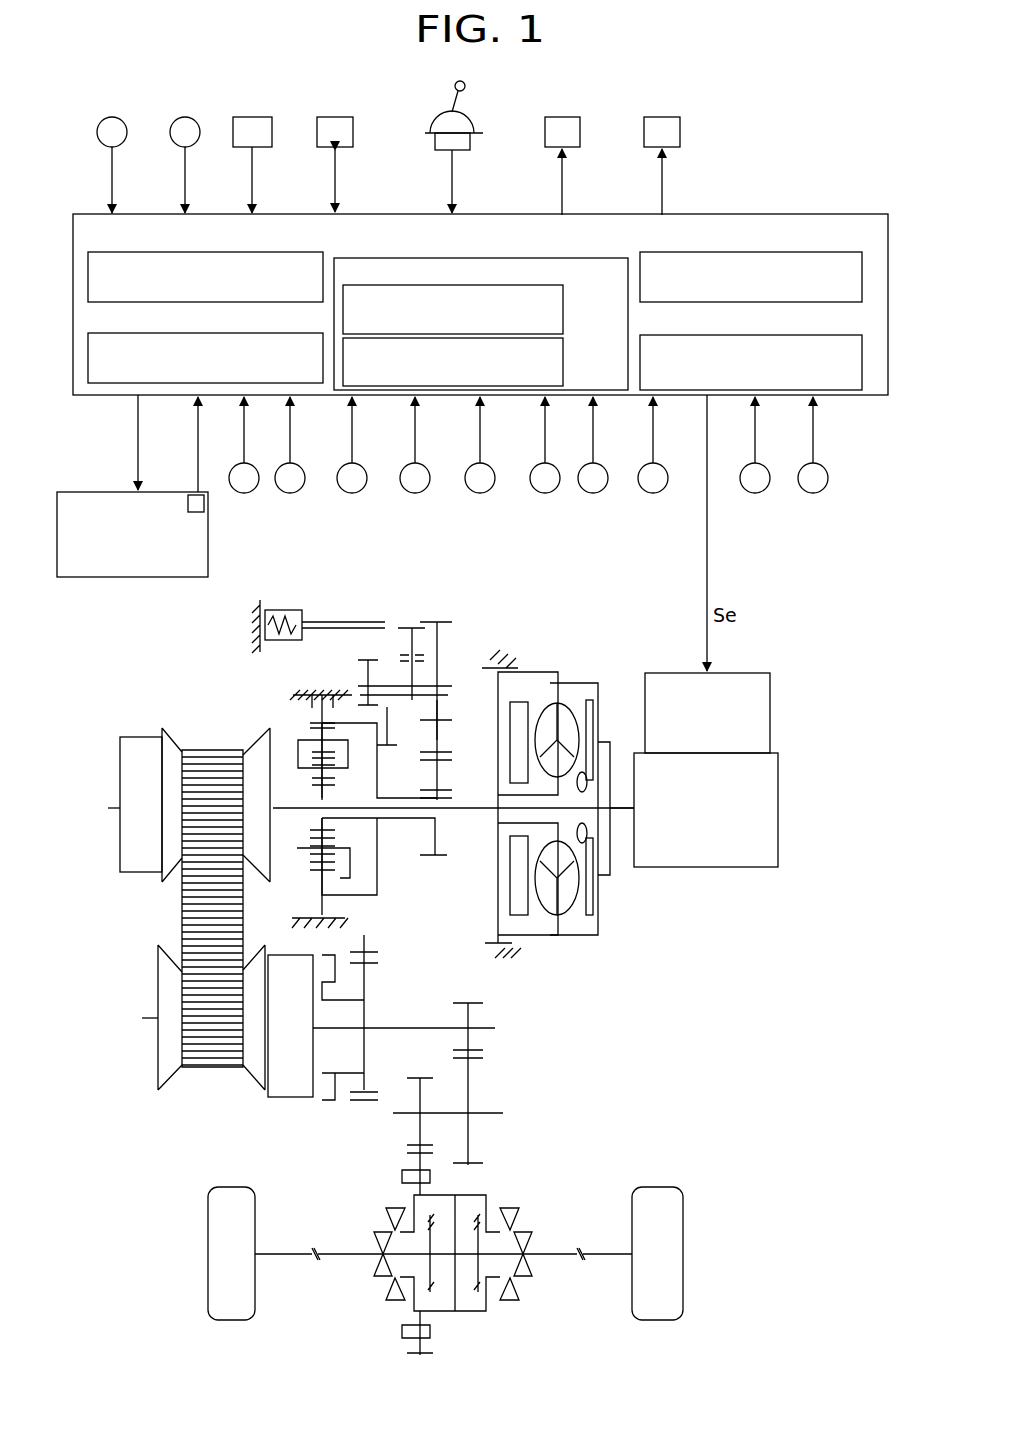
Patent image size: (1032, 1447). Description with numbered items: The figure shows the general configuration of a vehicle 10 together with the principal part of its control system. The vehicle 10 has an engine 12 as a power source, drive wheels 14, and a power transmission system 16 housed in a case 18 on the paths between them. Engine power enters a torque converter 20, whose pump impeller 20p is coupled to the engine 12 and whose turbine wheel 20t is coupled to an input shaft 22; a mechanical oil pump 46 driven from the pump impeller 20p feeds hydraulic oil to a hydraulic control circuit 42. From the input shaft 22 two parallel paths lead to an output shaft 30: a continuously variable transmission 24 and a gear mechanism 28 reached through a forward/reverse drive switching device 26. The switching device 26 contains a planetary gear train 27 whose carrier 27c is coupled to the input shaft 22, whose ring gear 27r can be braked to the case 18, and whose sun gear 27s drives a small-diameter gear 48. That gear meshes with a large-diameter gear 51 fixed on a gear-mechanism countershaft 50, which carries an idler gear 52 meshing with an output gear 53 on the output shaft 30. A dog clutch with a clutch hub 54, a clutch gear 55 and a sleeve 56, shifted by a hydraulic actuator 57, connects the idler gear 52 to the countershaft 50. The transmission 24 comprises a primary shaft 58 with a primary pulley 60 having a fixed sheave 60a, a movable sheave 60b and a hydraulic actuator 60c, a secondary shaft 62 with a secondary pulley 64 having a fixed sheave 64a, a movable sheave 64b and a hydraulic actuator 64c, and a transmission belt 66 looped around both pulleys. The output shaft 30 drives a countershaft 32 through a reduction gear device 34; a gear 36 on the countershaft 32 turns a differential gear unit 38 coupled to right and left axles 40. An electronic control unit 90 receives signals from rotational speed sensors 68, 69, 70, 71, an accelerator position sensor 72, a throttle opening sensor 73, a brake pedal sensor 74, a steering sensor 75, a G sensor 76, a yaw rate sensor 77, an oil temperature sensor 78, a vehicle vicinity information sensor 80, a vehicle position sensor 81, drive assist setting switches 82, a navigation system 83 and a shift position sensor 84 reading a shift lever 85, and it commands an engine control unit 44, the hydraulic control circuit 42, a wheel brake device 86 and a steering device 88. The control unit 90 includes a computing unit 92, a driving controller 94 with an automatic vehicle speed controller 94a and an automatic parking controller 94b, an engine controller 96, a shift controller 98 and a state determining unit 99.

The vehicle 10 is at (742, 85).
The engine 12 is at (752, 858).
The drive wheels 14 is at (232, 1200).
The vehicular power transmission system 16 is at (585, 607).
The case 18 is at (318, 664).
The torque converter 20 is at (564, 813).
The pump impeller 20p is at (550, 915).
The turbine wheel 20t is at (565, 920).
The input shaft 22 is at (476, 808).
The continuously variable transmission 24 is at (215, 692).
The forward/reverse drive switching device 26 is at (376, 1000).
The double pinion type planetary gear train 27 is at (345, 786).
The ring gear 27r is at (290, 722).
The carrier 27c is at (325, 780).
The sun gear 27s is at (345, 835).
The gear mechanism 28 is at (413, 855).
The output shaft 30 is at (395, 1032).
The countershaft 32 is at (485, 1112).
The reduction gear device 34 is at (500, 1050).
The gear 36 is at (455, 1055).
The differential gear unit 38 is at (452, 1315).
The axles 40 is at (328, 1258).
The hydraulic control circuit 42 is at (75, 496).
The engine control unit 44 is at (755, 684).
The mechanical oil pump 46 is at (518, 702).
The small-diameter gear 48 is at (437, 856).
The gear-mechanism countershaft 50 is at (445, 680).
The large-diameter gear 51 is at (422, 625).
The idler gear 52 is at (372, 668).
The output gear 53 is at (372, 1100).
The clutch hub 54 is at (445, 722).
The clutch gear 55 is at (405, 722).
The sleeve 56 is at (445, 762).
The hydraulic actuator 57 is at (290, 598).
The primary shaft 58 is at (112, 812).
The primary pulley 60 is at (171, 786).
The fixed sheave 60a is at (252, 748).
The movable sheave 60b is at (175, 745).
The hydraulic actuator 60c is at (146, 738).
The secondary shaft 62 is at (146, 1022).
The secondary pulley 64 is at (217, 1047).
The fixed sheave 64a is at (170, 1092).
The movable sheave 64b is at (255, 1092).
The hydraulic actuator 64c is at (290, 1098).
The transmission belt 66 is at (208, 1072).
The rotational speed sensor 68 is at (244, 493).
The rotational speed sensor 69 is at (290, 493).
The rotational speed sensor 70 is at (352, 493).
The rotational speed sensor 71 is at (415, 493).
The accelerator position sensor 72 is at (480, 493).
The throttle opening sensor 73 is at (545, 493).
The brake pedal sensor 74 is at (593, 493).
The steering sensor 75 is at (653, 493).
The G sensor 76 is at (755, 493).
The yaw rate sensor 77 is at (813, 493).
The oil temperature sensor 78 is at (190, 497).
The vehicle vicinity information sensor 80 is at (110, 120).
The vehicle position sensor 81 is at (184, 120).
The drive assist setting switches 82 is at (252, 122).
The navigation system 83 is at (334, 122).
The shift position sensor 84 is at (444, 157).
The shift lever 85 is at (465, 96).
The wheel brake device 86 is at (562, 124).
The steering device 88 is at (660, 124).
The electronic control unit 90 is at (790, 214).
The computing unit 92 is at (272, 258).
The driving controller 94 is at (592, 264).
The automatic vehicle speed controller 94a is at (563, 307).
The automatic parking controller 94b is at (563, 360).
The engine controller 96 is at (272, 338).
The shift controller 98 is at (813, 260).
The state determining unit 99 is at (813, 342).